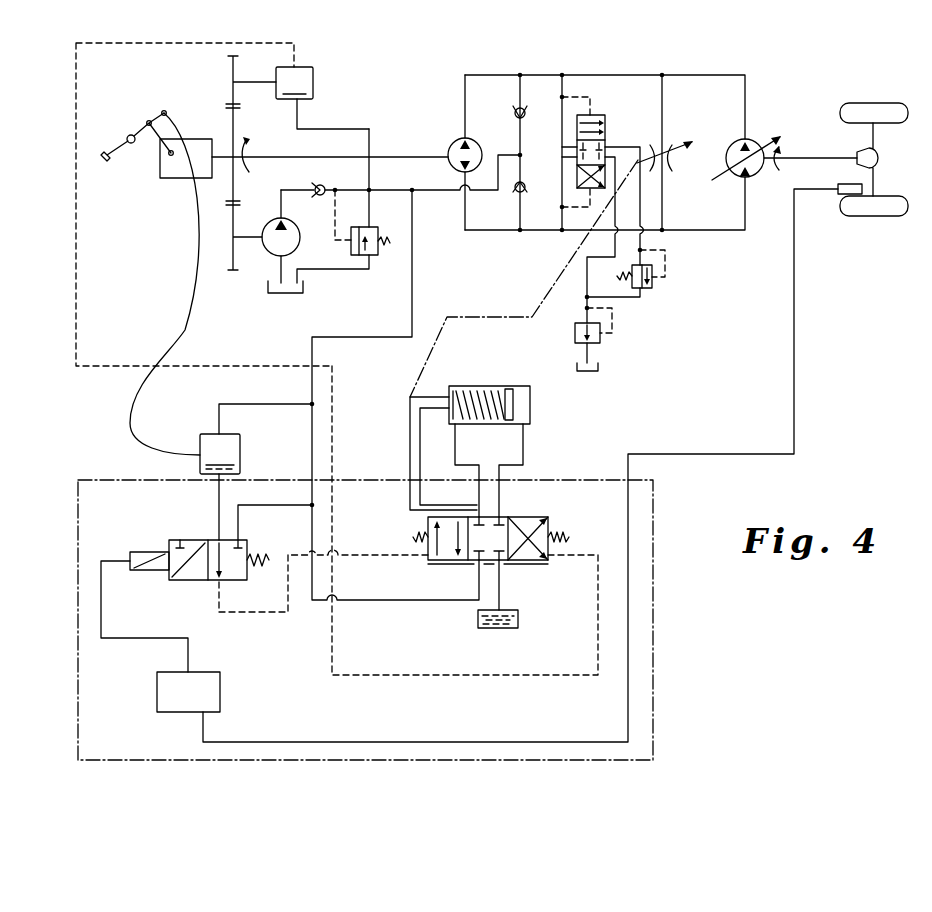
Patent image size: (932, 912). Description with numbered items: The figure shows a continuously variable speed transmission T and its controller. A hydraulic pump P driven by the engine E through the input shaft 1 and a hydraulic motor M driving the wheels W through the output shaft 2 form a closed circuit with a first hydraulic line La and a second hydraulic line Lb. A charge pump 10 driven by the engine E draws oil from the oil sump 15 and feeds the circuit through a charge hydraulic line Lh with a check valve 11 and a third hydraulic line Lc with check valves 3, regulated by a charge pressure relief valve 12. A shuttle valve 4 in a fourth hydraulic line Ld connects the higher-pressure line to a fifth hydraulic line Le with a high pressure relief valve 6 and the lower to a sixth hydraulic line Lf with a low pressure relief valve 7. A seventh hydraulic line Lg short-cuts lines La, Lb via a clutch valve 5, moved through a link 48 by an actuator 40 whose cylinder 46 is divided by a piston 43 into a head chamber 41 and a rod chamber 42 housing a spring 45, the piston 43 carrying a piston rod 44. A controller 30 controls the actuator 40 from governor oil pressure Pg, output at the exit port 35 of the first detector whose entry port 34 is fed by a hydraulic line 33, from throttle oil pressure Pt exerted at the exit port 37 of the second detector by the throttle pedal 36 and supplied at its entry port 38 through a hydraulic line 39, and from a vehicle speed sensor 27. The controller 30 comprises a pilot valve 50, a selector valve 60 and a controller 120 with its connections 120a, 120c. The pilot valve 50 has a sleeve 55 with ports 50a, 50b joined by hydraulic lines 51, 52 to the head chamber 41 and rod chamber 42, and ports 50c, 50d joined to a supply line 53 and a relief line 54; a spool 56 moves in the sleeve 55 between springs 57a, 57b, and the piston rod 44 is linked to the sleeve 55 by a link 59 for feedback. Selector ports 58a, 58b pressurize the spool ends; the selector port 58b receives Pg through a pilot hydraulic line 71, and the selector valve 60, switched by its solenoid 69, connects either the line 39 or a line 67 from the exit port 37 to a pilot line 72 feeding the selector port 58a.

The input shaft 1 is at (384, 157).
The output shaft 2 is at (822, 158).
The check valve 3 is at (514, 110).
The shuttle valve 4 is at (605, 115).
The clutch valve 5 is at (678, 160).
The high pressure relief valve 6 is at (652, 285).
The low pressure relief valve 7 is at (600, 340).
The charge pump 10 is at (300, 238).
The check valve 11 is at (316, 197).
The charge pressure relief valve 12 is at (378, 229).
The oil sump 15 is at (301, 293).
The vehicle speed sensor 27 is at (873, 177).
The controller 30 is at (383, 762).
The hydraulic line 33 is at (349, 129).
The entry port 34 is at (297, 103).
The exit port 35 is at (313, 71).
The throttle pedal 36 is at (127, 136).
The exit port 37 is at (219, 477).
The entry port 38 is at (219, 428).
The hydraulic line 39 is at (312, 432).
The actuator 40 is at (500, 380).
The head chamber 41 is at (532, 396).
The rod chamber 42 is at (490, 392).
The piston 43 is at (509, 390).
The piston rod 44 is at (434, 408).
The spring 45 is at (459, 392).
The cylinder 46 is at (530, 415).
The link 48 is at (576, 246).
The pilot valve 50 is at (536, 573).
The port 50a is at (500, 516).
The port 50b is at (478, 516).
The port 50c is at (478, 564).
The port 50d is at (501, 564).
The hydraulic line 51 is at (524, 462).
The hydraulic line 52 is at (455, 463).
The hydraulic supply line 53 is at (407, 601).
The hydraulic relief line 54 is at (502, 601).
The sleeve 55 is at (541, 517).
The spool 56 is at (549, 520).
The spring 57a is at (411, 537).
The spring 57b is at (572, 537).
The selector port 58a is at (421, 558).
The selector port 58b is at (549, 558).
The link 59 is at (410, 446).
The selector valve 60 is at (266, 548).
The hydraulic line 67 is at (218, 535).
The solenoid 69 is at (136, 571).
The pilot hydraulic line 71 is at (448, 677).
The pilot line 72 is at (268, 612).
The controller 120 is at (221, 690).
The signal line 120a is at (383, 742).
The signal line 120c is at (142, 638).
The engine E is at (206, 139).
The hydraulic pump P is at (452, 145).
The hydraulic motor M is at (765, 141).
The transmission T is at (724, 70).
The wheels W is at (883, 102).
The governor oil pressure Pg is at (78, 290).
The throttle oil pressure Pt is at (221, 508).
The first hydraulic line La is at (481, 230).
The second hydraulic line Lb is at (489, 75).
The third hydraulic line Lc is at (522, 139).
The fourth hydraulic line Ld is at (569, 96).
The fifth hydraulic line Le is at (636, 147).
The sixth hydraulic line Lf is at (584, 265).
The seventh hydraulic line Lg is at (668, 100).
The charge hydraulic line Lh is at (432, 192).